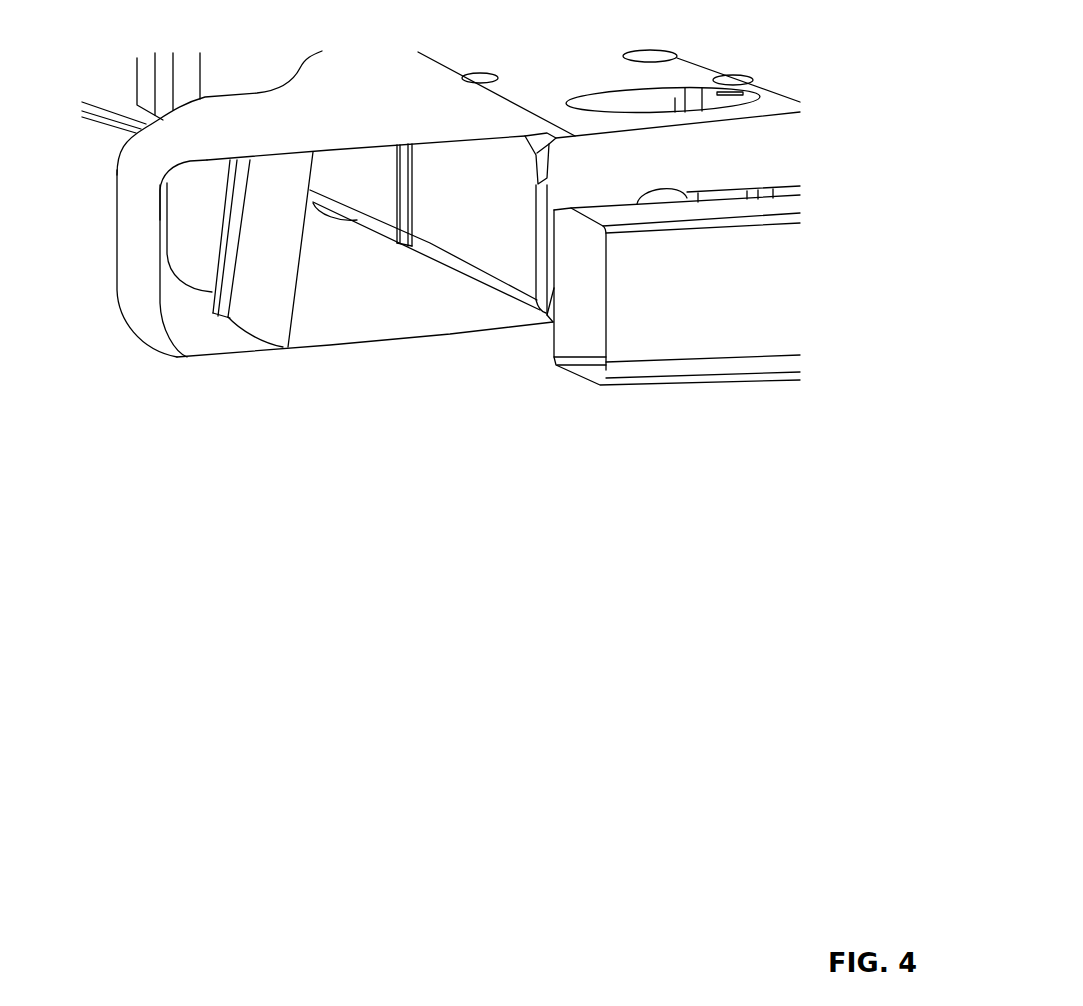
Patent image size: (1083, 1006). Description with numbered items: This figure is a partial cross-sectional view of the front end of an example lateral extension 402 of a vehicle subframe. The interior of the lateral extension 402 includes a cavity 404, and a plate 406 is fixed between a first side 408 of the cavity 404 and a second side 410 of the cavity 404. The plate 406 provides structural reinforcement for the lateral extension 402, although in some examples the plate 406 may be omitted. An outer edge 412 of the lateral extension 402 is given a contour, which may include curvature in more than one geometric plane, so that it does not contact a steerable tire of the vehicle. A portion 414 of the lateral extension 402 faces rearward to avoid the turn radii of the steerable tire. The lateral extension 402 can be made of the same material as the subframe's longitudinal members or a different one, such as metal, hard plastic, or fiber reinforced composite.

The lateral extension 402 is at (353, 110).
The cavity 404 is at (518, 210).
The plate 406 is at (297, 293).
The first side of the cavity 408 is at (447, 335).
The second side of the cavity 410 is at (392, 145).
The outer edge 412 is at (97, 252).
The portion of the lateral extension 414 is at (256, 92).